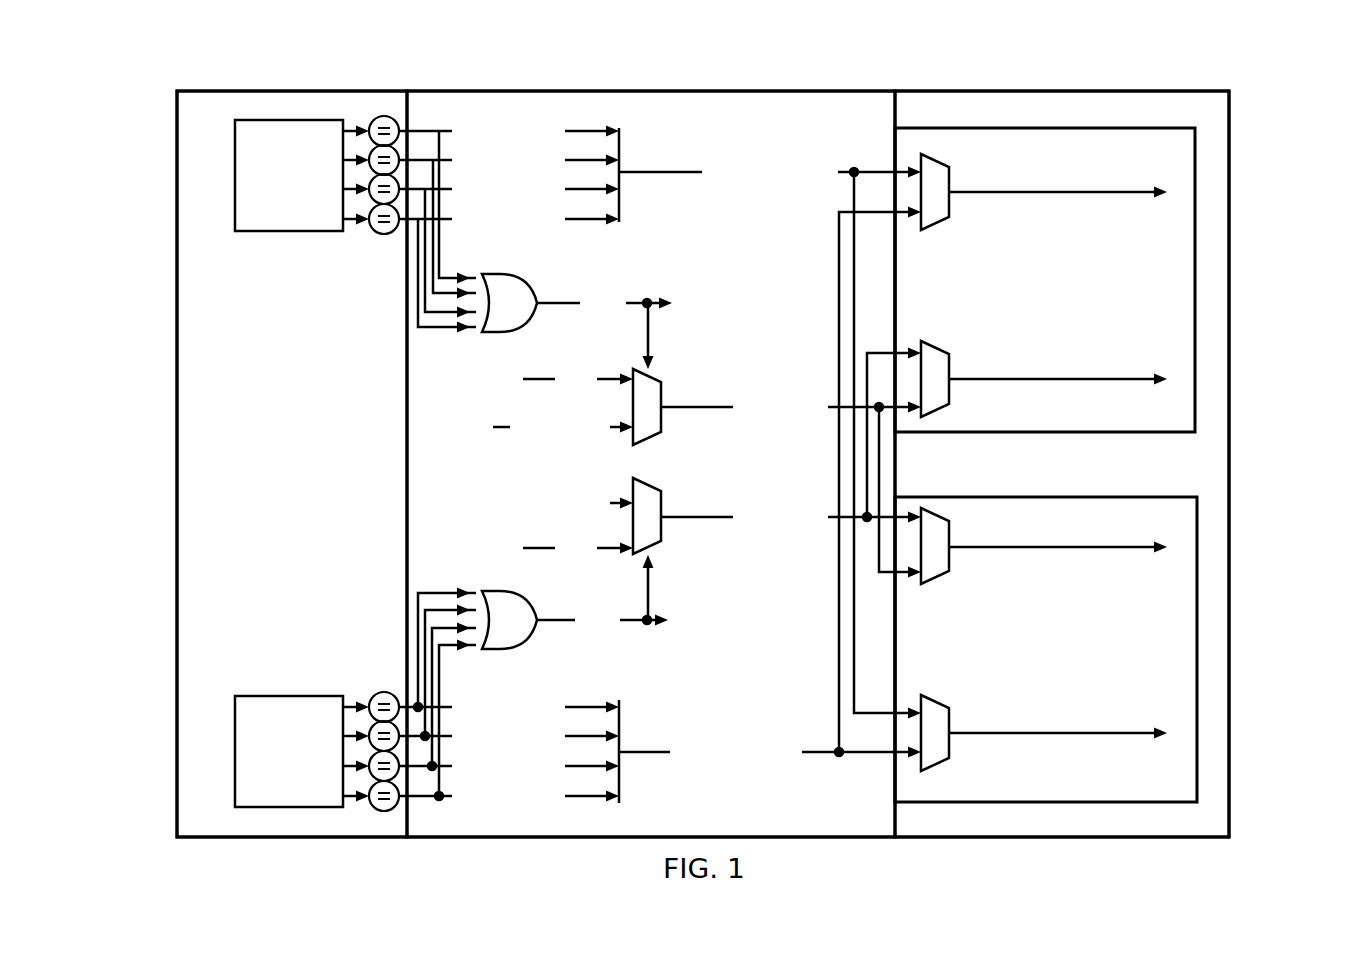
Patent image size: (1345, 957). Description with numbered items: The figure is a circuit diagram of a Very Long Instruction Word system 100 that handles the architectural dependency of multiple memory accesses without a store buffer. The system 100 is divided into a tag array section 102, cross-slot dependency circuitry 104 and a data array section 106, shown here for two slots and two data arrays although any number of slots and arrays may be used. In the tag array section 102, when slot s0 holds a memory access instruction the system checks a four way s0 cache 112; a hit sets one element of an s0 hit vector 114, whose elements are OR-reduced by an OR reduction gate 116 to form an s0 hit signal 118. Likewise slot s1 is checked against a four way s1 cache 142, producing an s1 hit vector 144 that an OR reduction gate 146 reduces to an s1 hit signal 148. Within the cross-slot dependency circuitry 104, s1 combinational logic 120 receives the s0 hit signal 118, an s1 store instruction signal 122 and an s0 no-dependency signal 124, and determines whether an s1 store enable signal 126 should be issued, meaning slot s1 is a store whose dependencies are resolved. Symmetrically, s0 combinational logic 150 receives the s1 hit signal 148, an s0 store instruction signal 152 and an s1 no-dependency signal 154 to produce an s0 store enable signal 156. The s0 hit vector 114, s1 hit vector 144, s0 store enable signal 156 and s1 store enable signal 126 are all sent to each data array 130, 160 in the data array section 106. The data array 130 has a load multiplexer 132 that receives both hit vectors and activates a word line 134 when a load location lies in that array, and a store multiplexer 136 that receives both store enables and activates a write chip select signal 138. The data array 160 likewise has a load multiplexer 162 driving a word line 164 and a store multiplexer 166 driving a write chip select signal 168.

The system 100 is at (1286, 109).
The tag array section 102 is at (300, 91).
The cross-slot dependency circuitry 104 is at (580, 91).
The data array section 106 is at (1006, 91).
The four way s0 cache 112 is at (386, 237).
The s0 hit vector 114 is at (641, 149).
The OR reduction gate 116 is at (505, 276).
The s0 hit signal 118 is at (637, 303).
The s1 combinational logic 120 is at (665, 392).
The s1 store instruction signal 122 is at (549, 379).
The s0 no-dependency signal 124 is at (503, 427).
The s1 store enable signal 126 is at (673, 411).
The data array 130 is at (1130, 128).
The load multiplexer 132 is at (935, 158).
The word line 134 is at (1147, 199).
The store multiplexer 136 is at (935, 347).
The write chip select signal 138 is at (1151, 380).
The four way s1 cache 142 is at (397, 692).
The s1 hit vector 144 is at (647, 776).
The OR reduction gate 146 is at (505, 594).
The s1 hit signal 148 is at (631, 623).
The s0 combinational logic 150 is at (665, 526).
The s0 store instruction signal 152 is at (607, 550).
The s1 no-dependency signal 154 is at (506, 502).
The s0 store enable signal 156 is at (670, 513).
The data array 160 is at (1130, 803).
The load multiplexer 162 is at (935, 701).
The word line 164 is at (1157, 731).
The store multiplexer 166 is at (935, 580).
The write chip select signal 168 is at (1155, 553).